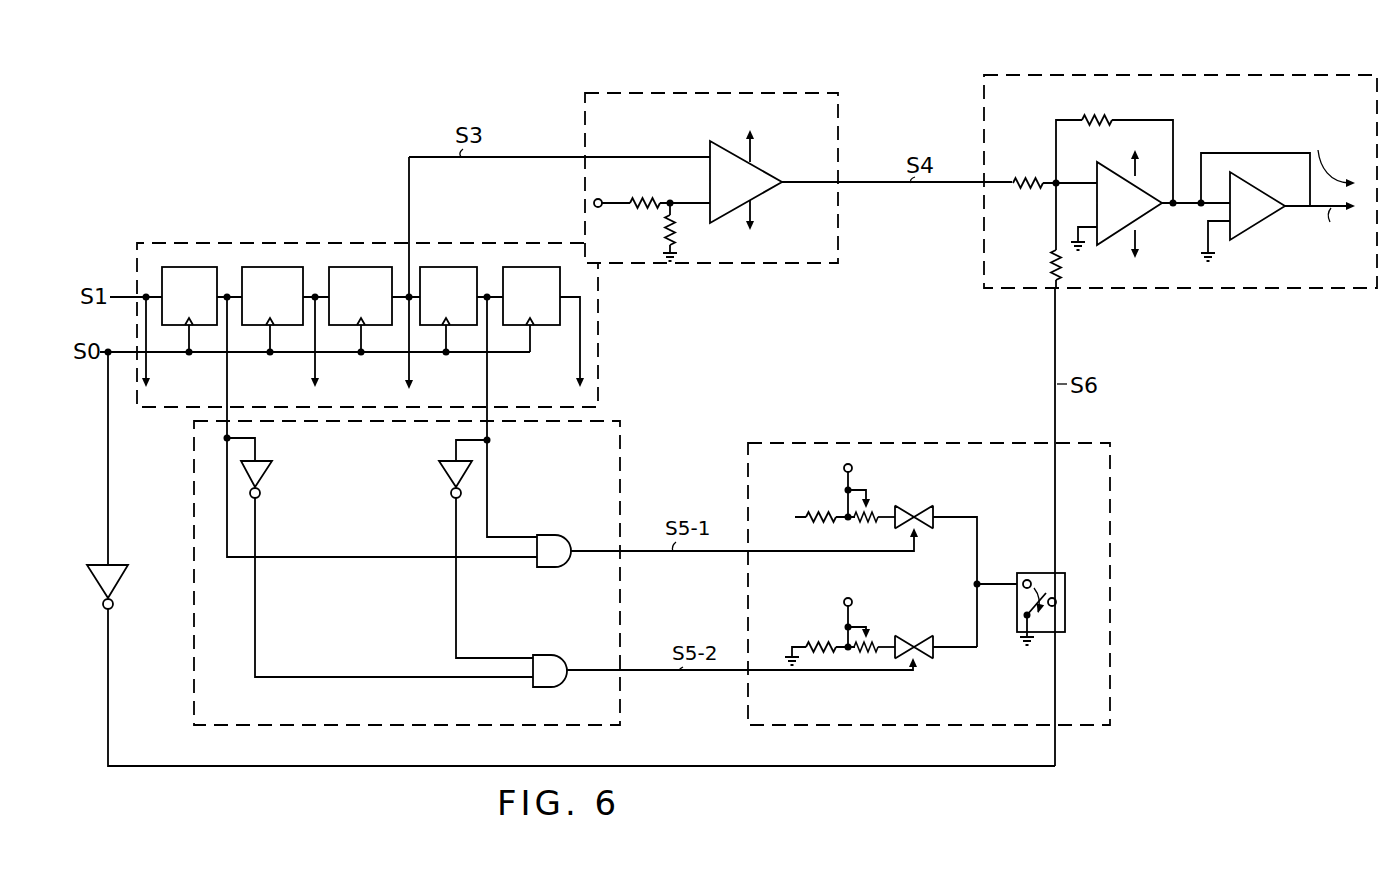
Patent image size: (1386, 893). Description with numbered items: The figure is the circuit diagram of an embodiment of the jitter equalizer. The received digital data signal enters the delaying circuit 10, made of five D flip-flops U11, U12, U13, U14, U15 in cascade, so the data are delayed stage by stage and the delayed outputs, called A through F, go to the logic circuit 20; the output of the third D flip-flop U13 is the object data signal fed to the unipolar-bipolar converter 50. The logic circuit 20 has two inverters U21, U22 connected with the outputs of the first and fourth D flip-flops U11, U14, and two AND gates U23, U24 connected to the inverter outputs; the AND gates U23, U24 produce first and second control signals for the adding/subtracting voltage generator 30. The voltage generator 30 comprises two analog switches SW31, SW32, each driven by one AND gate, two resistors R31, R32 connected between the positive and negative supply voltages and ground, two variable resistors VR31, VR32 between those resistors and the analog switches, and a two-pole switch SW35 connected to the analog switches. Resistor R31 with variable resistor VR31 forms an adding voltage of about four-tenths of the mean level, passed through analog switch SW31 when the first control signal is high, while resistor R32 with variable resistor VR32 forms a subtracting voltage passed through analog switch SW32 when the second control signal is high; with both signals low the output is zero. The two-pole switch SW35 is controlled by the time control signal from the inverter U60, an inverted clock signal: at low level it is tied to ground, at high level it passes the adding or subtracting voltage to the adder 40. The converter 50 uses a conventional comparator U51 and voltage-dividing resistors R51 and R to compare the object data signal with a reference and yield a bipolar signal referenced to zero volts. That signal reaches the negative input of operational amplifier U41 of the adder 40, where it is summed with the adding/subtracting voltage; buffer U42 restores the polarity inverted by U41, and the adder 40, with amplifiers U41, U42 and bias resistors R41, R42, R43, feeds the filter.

The delaying circuit 10 is at (598, 318).
The logic circuit 20 is at (620, 421).
The adding/subtracting voltage generator 30 is at (940, 443).
The adder 40 is at (1073, 75).
The unipolar-bipolar converter 50 is at (780, 93).
The first D flip-flop U11 is at (189, 296).
The D flip-flop U12 is at (272, 296).
The third D flip-flop U13 is at (360, 296).
The fourth D flip-flop U14 is at (448, 296).
The D flip-flop U15 is at (531, 296).
The inverter U21 is at (447, 473).
The inverter U22 is at (264, 473).
The AND gate U23 is at (552, 535).
The AND gate U24 is at (548, 655).
The inverter U60 is at (120, 583).
The comparator U51 is at (746, 181).
The voltage-dividing resistor R51 is at (656, 190).
The resistor R is at (677, 228).
The operational amplifier U41 is at (1117, 203).
The buffer U42 is at (1258, 238).
The bias resistor R41 is at (1053, 169).
The bias resistor R42 is at (1035, 235).
The bias resistor R43 is at (1114, 148).
The resistor R31 is at (825, 505).
The resistor R32 is at (823, 637).
The variable resistor VR31 is at (865, 530).
The variable resistor VR32 is at (867, 660).
The analog switch SW31 is at (935, 561).
The analog switch SW32 is at (935, 634).
The switch SW35 is at (1061, 595).